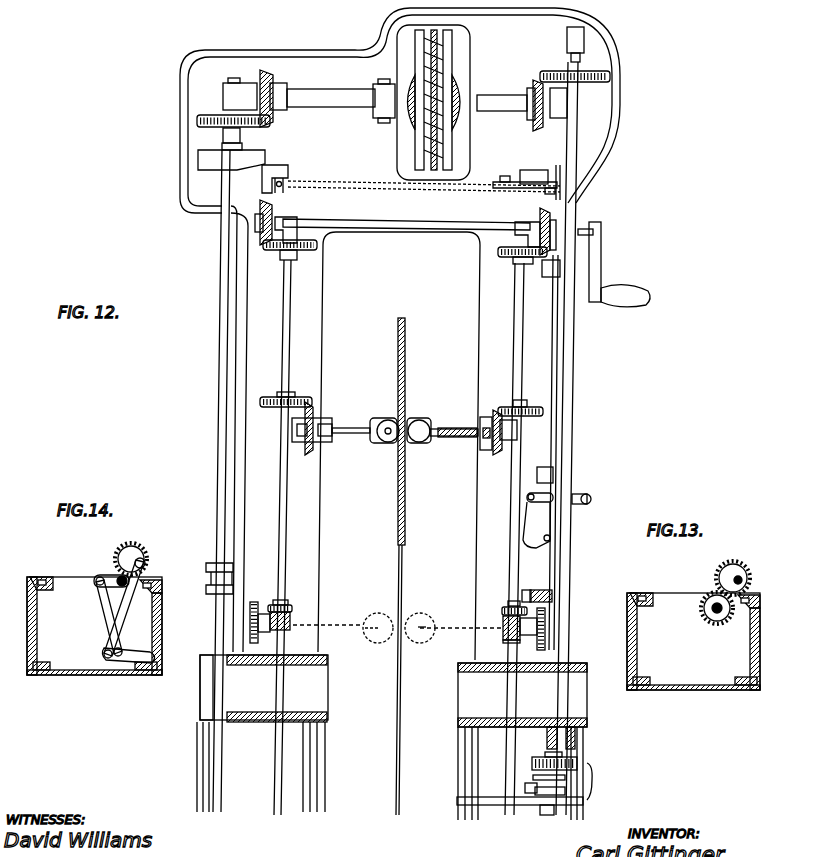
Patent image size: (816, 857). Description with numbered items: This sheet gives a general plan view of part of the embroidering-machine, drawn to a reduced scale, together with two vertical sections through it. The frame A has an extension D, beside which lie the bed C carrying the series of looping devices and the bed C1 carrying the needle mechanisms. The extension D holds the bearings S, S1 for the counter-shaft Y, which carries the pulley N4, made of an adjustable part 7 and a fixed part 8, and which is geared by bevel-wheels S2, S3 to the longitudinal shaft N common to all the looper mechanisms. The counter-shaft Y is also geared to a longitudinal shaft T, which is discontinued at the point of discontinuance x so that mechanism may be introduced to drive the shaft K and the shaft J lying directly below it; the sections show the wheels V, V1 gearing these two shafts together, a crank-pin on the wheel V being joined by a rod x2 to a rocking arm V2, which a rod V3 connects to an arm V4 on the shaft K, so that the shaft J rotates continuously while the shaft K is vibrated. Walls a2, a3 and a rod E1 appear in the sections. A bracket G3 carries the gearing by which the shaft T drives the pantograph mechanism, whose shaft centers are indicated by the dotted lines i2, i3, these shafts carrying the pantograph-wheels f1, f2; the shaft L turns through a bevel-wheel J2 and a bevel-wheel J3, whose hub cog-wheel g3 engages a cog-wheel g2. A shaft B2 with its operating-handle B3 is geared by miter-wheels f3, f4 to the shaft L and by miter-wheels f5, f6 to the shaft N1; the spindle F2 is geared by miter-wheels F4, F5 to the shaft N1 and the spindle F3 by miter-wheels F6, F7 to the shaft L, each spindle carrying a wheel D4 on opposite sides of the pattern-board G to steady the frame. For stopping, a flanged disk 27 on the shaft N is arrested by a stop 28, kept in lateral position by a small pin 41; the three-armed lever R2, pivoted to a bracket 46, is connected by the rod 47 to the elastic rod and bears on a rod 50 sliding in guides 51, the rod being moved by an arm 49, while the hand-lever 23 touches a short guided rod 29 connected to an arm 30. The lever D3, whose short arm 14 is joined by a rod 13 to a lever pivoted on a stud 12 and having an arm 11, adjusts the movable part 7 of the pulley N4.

In FIG. 12, the extension of the frame D is at (188, 70).
In FIG. 12, the longitudinal shaft N is at (231, 180).
In FIG. 12, the bearing S is at (240, 94).
In FIG. 12, the bearing S1 is at (568, 101).
In FIG. 12, the bevel-wheel S2 is at (273, 76).
In FIG. 12, the bevel-wheel S3 is at (258, 129).
In FIG. 12, the counter-shaft Y is at (407, 100).
In FIG. 12, the lever D3 is at (385, 120).
In FIG. 12, the pulley N4 is at (433, 107).
In FIG. 12, the adjustable part of pulley 7 is at (415, 47).
In FIG. 12, the fixed part of pulley 8 is at (433, 180).
In FIG. 12, the longitudinal shaft T is at (578, 190).
In FIG. 12, the flanged disk 27 is at (231, 160).
In FIG. 12, the stop 28 is at (281, 168).
In FIG. 12, the small pin 41 is at (286, 183).
In FIG. 12, the rod 47 is at (424, 191).
In FIG. 12, the bracket 46 is at (530, 174).
In FIG. 12, the three-armed lever R2 is at (518, 188).
In FIG. 12, the shaft B2 is at (418, 223).
In FIG. 12, the miter-wheel f3 is at (541, 215).
In FIG. 12, the miter-wheel f4 is at (510, 251).
In FIG. 12, the miter-wheel f5 is at (272, 211).
In FIG. 12, the miter-wheel f6 is at (312, 246).
In FIG. 12, the guides 51 is at (547, 278).
In FIG. 12, the rod 50 is at (553, 353).
In FIG. 12, the operating-handle B3 is at (614, 264).
In FIG. 12, the shaft N1 is at (292, 322).
In FIG. 12, the shaft L is at (517, 328).
In FIG. 12, the pattern-board G is at (405, 360).
In FIG. 12, the rod E1 is at (400, 580).
In FIG. 12, the spindle F2 is at (351, 421).
In FIG. 12, the spindle F3 is at (441, 438).
In FIG. 12, the miter-wheel F4 is at (283, 393).
In FIG. 12, the miter-wheel F5 is at (315, 414).
In FIG. 12, the miter-wheel F6 is at (508, 405).
In FIG. 12, the miter-wheel F7 is at (500, 453).
In FIG. 12, the wheel D4 is at (400, 422).
In FIG. 12, the short guided rod 29 is at (539, 491).
In FIG. 12, the arm 30 is at (527, 518).
In FIG. 12, the arm 49 is at (546, 541).
In FIG. 12, the hand-lever 23 is at (591, 499).
In FIG. 12, the bracket G3 is at (543, 587).
In FIG. 12, the bevel-wheel J2 is at (503, 615).
In FIG. 12, the bevel-wheel J3 is at (524, 644).
In FIG. 12, the cog-wheel g2 is at (257, 614).
In FIG. 12, the cog-wheel g3 is at (543, 628).
In FIG. 12, the dotted line i2 is at (327, 616).
In FIG. 12, the dotted line i3 is at (461, 618).
In FIG. 12, the pantograph-wheel f1 is at (380, 613).
In FIG. 12, the pantograph-wheel f2 is at (420, 618).
In FIG. 12, the frame A is at (393, 702).
In FIG. 12, the bed C is at (323, 815).
In FIG. 12, the bed C1 is at (583, 822).
In FIG. 14, the bed C1 is at (94, 638).
In FIG. 13, the bed C1 is at (695, 655).
In FIG. 12, the arm of lever 11 is at (460, 797).
In FIG. 12, the stud 12 is at (596, 797).
In FIG. 12, the rod 13 is at (460, 766).
In FIG. 12, the short arm of lever 14 is at (596, 768).
In FIG. 12, the point of discontinuance x is at (595, 781).
In FIG. 12, the shaft K is at (547, 817).
In FIG. 14, the shaft K is at (99, 588).
In FIG. 14, the wheel V is at (119, 550).
In FIG. 13, the wheel V is at (750, 572).
In FIG. 13, the wheel V1 is at (712, 599).
In FIG. 14, the rocking arm V2 is at (138, 655).
In FIG. 14, the rod V3 is at (106, 614).
In FIG. 14, the arm V4 is at (104, 575).
In FIG. 14, the rod x2 is at (128, 606).
In FIG. 14, the wall a2 is at (31, 626).
In FIG. 13, the wall a2 is at (632, 641).
In FIG. 14, the wall a3 is at (159, 627).
In FIG. 13, the wall a3 is at (759, 642).
In FIG. 13, the shaft J is at (703, 615).